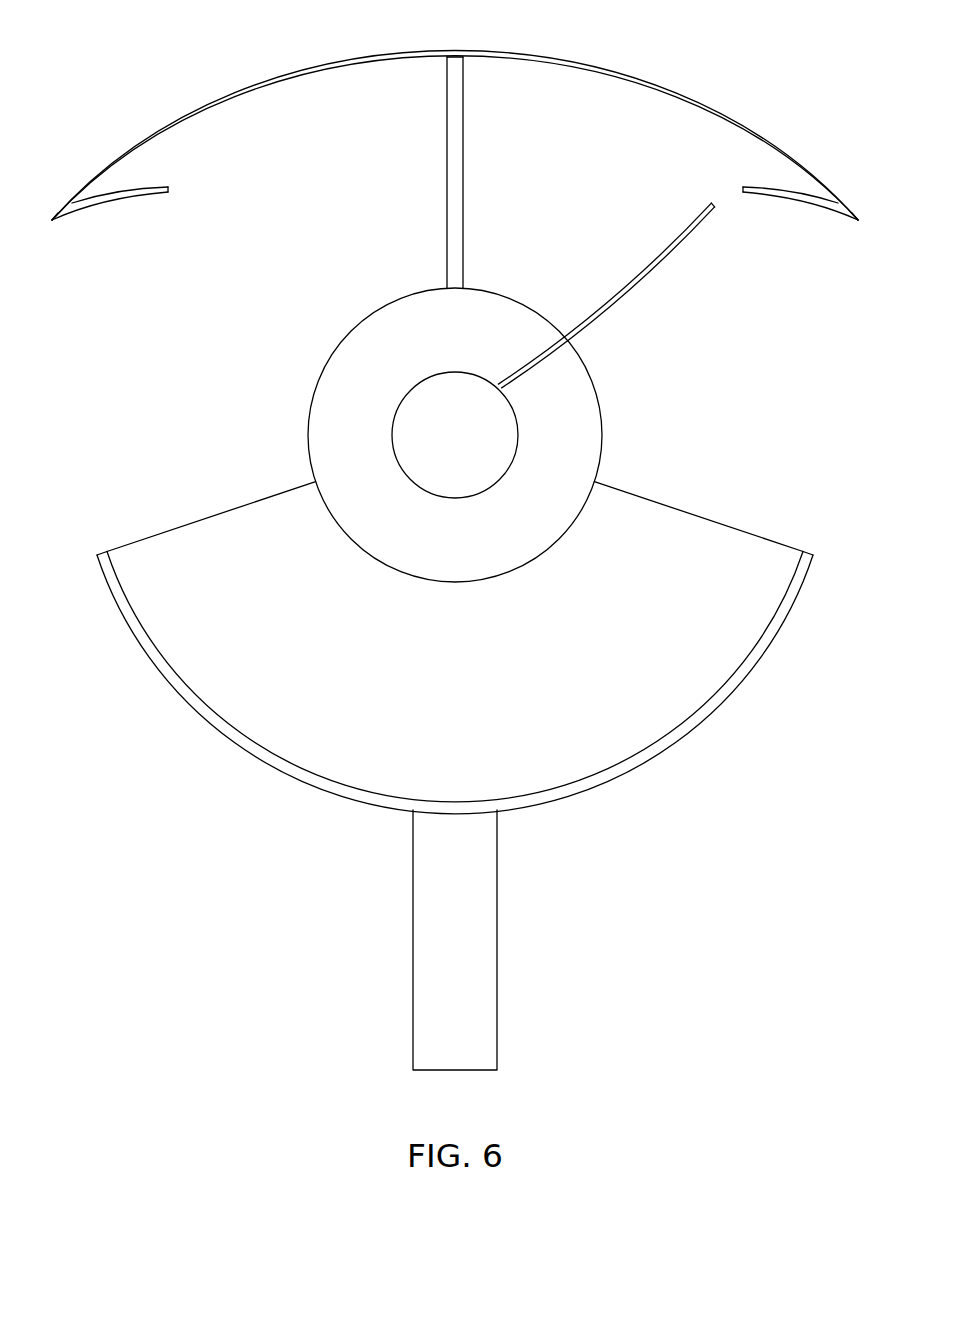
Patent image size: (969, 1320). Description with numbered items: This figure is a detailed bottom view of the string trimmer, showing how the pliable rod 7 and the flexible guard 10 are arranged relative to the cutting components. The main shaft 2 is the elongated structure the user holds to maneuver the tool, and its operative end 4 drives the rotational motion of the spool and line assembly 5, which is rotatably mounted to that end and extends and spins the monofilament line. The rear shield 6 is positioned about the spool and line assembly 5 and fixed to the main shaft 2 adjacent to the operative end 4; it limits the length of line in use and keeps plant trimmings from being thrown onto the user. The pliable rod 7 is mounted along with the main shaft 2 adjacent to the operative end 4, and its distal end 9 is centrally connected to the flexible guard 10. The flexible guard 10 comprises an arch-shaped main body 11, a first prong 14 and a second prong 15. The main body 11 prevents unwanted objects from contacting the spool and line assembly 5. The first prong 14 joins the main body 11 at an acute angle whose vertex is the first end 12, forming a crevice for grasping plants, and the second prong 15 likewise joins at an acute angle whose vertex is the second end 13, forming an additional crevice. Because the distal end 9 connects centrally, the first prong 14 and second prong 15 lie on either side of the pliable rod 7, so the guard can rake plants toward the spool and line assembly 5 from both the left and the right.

The main shaft 2 is at (497, 1044).
The operative end 4 is at (457, 940).
The spool and line assembly 5 is at (600, 435).
The rear shield 6 is at (116, 550).
The pliable rod 7 is at (449, 180).
The distal end 9 is at (464, 68).
The flexible guard 10 is at (455, 111).
The main body 11 is at (357, 62).
The first end 12 is at (103, 173).
The second end 13 is at (806, 173).
The first prong 14 is at (108, 198).
The second prong 15 is at (788, 198).